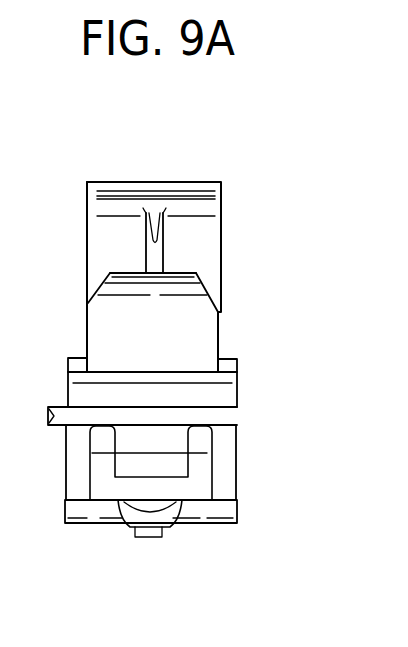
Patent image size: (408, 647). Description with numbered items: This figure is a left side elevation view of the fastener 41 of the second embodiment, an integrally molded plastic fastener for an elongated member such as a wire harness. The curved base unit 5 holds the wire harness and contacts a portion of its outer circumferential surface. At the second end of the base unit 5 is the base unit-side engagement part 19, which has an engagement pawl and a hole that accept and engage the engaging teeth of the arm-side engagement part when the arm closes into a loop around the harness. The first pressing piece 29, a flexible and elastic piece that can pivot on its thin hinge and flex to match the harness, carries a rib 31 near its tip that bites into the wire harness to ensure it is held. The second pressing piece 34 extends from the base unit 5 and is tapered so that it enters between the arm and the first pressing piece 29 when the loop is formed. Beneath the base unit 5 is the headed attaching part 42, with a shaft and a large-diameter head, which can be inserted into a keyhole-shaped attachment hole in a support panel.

The fastener 41 is at (273, 186).
The first pressing piece 29 is at (210, 247).
The rib 31 is at (148, 254).
The second pressing piece 34 is at (207, 332).
The base unit 5 is at (218, 517).
The base unit-side engagement part 19 is at (172, 462).
The headed attaching part 42 is at (165, 520).